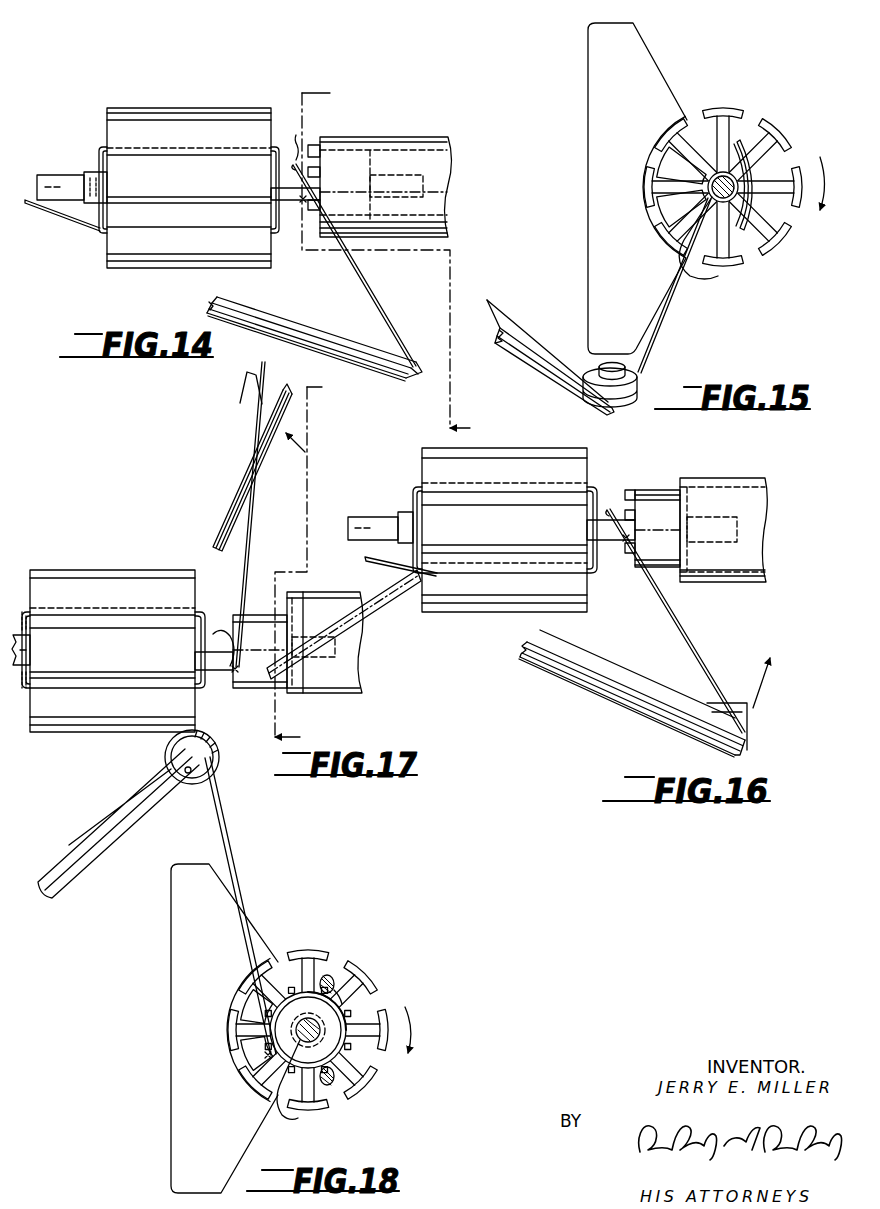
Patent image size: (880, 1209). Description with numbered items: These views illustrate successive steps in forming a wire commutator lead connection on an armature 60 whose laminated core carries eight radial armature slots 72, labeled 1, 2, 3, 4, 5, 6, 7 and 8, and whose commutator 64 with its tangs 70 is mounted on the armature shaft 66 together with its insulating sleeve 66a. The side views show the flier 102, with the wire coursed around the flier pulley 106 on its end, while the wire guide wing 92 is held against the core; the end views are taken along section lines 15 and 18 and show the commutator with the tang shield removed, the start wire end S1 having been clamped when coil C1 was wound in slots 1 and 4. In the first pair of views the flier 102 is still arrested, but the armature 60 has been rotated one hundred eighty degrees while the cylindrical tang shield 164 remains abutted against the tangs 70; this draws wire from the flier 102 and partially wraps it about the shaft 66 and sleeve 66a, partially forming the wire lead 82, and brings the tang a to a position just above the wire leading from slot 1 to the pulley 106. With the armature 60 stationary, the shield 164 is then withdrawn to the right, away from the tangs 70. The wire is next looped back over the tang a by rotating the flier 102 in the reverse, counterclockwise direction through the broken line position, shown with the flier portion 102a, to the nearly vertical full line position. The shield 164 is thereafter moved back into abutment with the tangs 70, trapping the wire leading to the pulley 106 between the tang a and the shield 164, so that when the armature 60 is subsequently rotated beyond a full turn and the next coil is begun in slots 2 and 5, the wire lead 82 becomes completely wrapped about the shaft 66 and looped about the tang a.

In FIG. 14, the armature 60 is at (104, 93).
In FIG. 15, the armature 60 is at (767, 106).
In FIG. 16, the commutator 64 is at (665, 490).
In FIG. 18, the commutator 64 is at (366, 1052).
In FIG. 14, the armature shaft 66 is at (72, 174).
In FIG. 15, the armature shaft 66 is at (690, 277).
In FIG. 18, the armature shaft 66 is at (288, 1115).
In FIG. 15, the insulating sleeve 66a is at (752, 254).
In FIG. 14, the tangs 70 is at (314, 143).
In FIG. 16, the tangs 70 is at (631, 490).
In FIG. 18, the tangs 70 is at (288, 985).
In FIG. 18, the radial armature slots 72 is at (332, 976).
In FIG. 14, the wire lead 82 is at (298, 158).
In FIG. 17, the wire lead 82 is at (226, 632).
In FIG. 15, the wire guide wing 92 is at (588, 80).
In FIG. 18, the wire guide wing 92 is at (171, 910).
In FIG. 14, the flier 102 is at (233, 302).
In FIG. 15, the flier 102 is at (530, 366).
In FIG. 16, the flier 102 is at (590, 695).
In FIG. 17, the flier 102 is at (226, 516).
In FIG. 18, the flier 102 is at (148, 825).
In FIG. 17, the lever arm portion 102a is at (382, 638).
In FIG. 14, the flier pulley 106 is at (398, 350).
In FIG. 15, the flier pulley 106 is at (640, 387).
In FIG. 16, the flier pulley 106 is at (762, 726).
In FIG. 17, the flier pulley 106 is at (246, 409).
In FIG. 18, the flier pulley 106 is at (222, 760).
In FIG. 14, the tang shield 164 is at (385, 137).
In FIG. 16, the tang shield 164 is at (738, 478).
In FIG. 17, the tang shield 164 is at (334, 693).
In FIG. 14, the start wire end S1 is at (68, 212).
In FIG. 16, the start wire end S1 is at (380, 560).
In FIG. 17, the start wire end S1 is at (26, 686).
In FIG. 17, the coil C1 is at (26, 612).
In FIG. 18, the coil C1 is at (341, 990).
In FIG. 14, the tang a is at (305, 200).
In FIG. 16, the tang a is at (622, 565).
In FIG. 17, the tang a is at (232, 672).
In FIG. 18, the tang a is at (265, 1055).
In FIG. 14, the section line 15 is at (386, 255).
In FIG. 17, the section line 18 is at (289, 558).
In FIG. 15, the armature slot 1 is at (749, 249).
In FIG. 18, the armature slot 1 is at (335, 1093).
In FIG. 15, the armature slot 2 is at (781, 217).
In FIG. 18, the armature slot 2 is at (367, 1061).
In FIG. 15, the armature slot 3 is at (781, 173).
In FIG. 18, the armature slot 3 is at (367, 1015).
In FIG. 15, the armature slot 4 is at (749, 141).
In FIG. 18, the armature slot 4 is at (335, 983).
In FIG. 15, the armature slot 5 is at (705, 141).
In FIG. 18, the armature slot 5 is at (289, 983).
In FIG. 15, the armature slot 6 is at (673, 173).
In FIG. 18, the armature slot 6 is at (257, 1015).
In FIG. 15, the armature slot 7 is at (673, 217).
In FIG. 18, the armature slot 7 is at (257, 1061).
In FIG. 15, the armature slot 8 is at (705, 249).
In FIG. 18, the armature slot 8 is at (289, 1093).